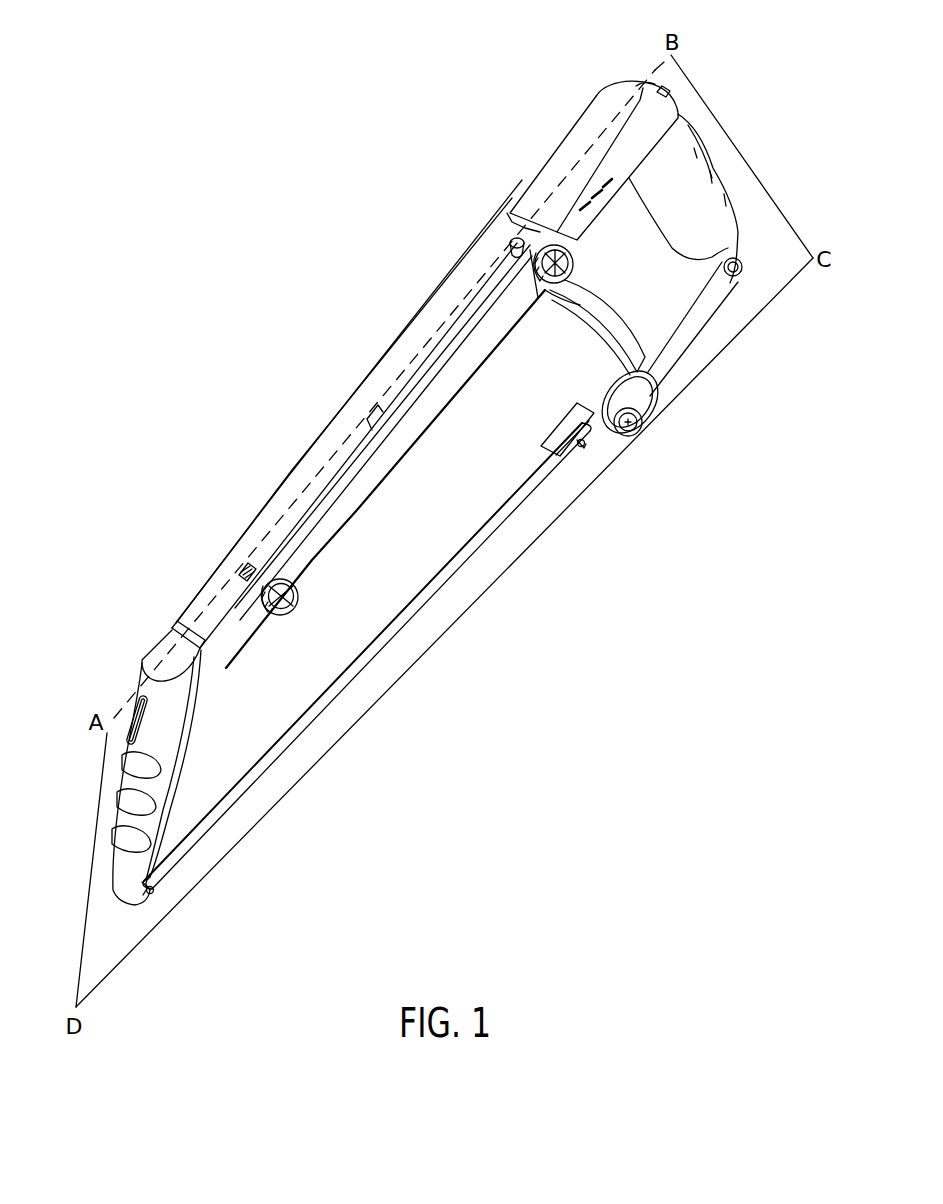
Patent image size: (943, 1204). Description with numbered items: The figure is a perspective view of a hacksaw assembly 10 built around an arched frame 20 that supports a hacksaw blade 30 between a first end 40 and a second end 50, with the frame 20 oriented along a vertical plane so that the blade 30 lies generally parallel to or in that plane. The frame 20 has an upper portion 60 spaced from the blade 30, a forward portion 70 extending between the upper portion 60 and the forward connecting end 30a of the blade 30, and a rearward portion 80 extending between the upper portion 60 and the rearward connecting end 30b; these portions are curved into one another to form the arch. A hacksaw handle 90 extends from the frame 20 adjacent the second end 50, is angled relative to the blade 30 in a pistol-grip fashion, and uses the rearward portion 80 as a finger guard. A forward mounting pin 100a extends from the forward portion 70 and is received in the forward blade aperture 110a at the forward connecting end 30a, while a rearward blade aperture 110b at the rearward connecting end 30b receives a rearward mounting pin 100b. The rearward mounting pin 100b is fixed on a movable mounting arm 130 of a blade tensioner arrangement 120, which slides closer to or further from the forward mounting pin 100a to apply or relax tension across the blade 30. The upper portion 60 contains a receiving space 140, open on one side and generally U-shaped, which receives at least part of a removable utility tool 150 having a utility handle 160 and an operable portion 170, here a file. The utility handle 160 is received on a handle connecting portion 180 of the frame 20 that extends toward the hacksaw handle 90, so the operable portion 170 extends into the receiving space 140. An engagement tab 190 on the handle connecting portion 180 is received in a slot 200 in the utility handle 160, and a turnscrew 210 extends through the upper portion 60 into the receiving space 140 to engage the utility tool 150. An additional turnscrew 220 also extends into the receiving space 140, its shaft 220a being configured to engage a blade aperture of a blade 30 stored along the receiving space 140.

The hacksaw assembly 10 is at (240, 330).
The frame 20 is at (374, 473).
The hacksaw blade 30 is at (370, 658).
The forward connecting end 30a is at (163, 888).
The rearward connecting end 30b is at (584, 453).
The first end 40 is at (117, 917).
The second end 50 is at (645, 446).
The upper portion 60 is at (337, 518).
The forward portion 70 is at (179, 754).
The rearward portion 80 is at (600, 327).
The hacksaw handle 90 is at (690, 187).
The forward mounting pin 100a is at (147, 892).
The rearward mounting pin 100b is at (577, 452).
The forward blade aperture 110a is at (150, 863).
The rearward blade aperture 110b is at (547, 447).
The blade tensioner arrangement 120 is at (668, 372).
The movable mounting arm 130 is at (567, 430).
The receiving space 140 is at (405, 355).
The removable utility tool 150 is at (524, 189).
The utility handle 160 is at (568, 145).
The operable portion 170 is at (468, 310).
The handle connecting portion 180 is at (603, 217).
The engagement tab 190 is at (658, 88).
The slot 200 is at (670, 90).
The turnscrew 210 is at (553, 303).
The turnscrew 220 is at (280, 615).
The shaft 220a is at (249, 570).